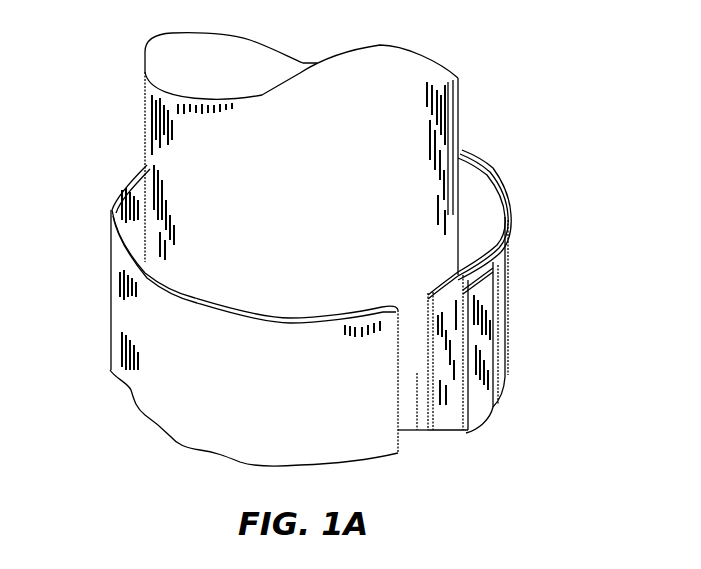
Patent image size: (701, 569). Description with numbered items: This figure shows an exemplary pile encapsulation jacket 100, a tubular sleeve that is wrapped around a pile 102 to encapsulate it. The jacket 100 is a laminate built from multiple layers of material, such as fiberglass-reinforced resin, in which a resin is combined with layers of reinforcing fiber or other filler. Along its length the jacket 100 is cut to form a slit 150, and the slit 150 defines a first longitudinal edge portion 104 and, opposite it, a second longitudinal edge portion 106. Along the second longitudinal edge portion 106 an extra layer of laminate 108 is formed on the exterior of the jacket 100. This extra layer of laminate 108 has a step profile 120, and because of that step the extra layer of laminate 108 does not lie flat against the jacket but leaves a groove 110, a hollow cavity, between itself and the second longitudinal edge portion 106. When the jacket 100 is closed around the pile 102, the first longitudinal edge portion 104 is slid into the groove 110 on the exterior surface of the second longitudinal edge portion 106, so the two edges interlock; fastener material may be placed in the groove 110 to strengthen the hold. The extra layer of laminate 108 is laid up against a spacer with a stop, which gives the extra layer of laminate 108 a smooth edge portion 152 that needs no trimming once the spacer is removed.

The pile encapsulation jacket 100 is at (111, 209).
The pile 102 is at (433, 105).
The first longitudinal edge portion 104 is at (272, 437).
The second longitudinal edge portion 106 is at (447, 405).
The extra layer of laminate 108 is at (498, 274).
The groove 110 is at (498, 281).
The step profile 120 is at (510, 277).
The slit 150 is at (417, 373).
The smooth edge portion 152 is at (465, 435).